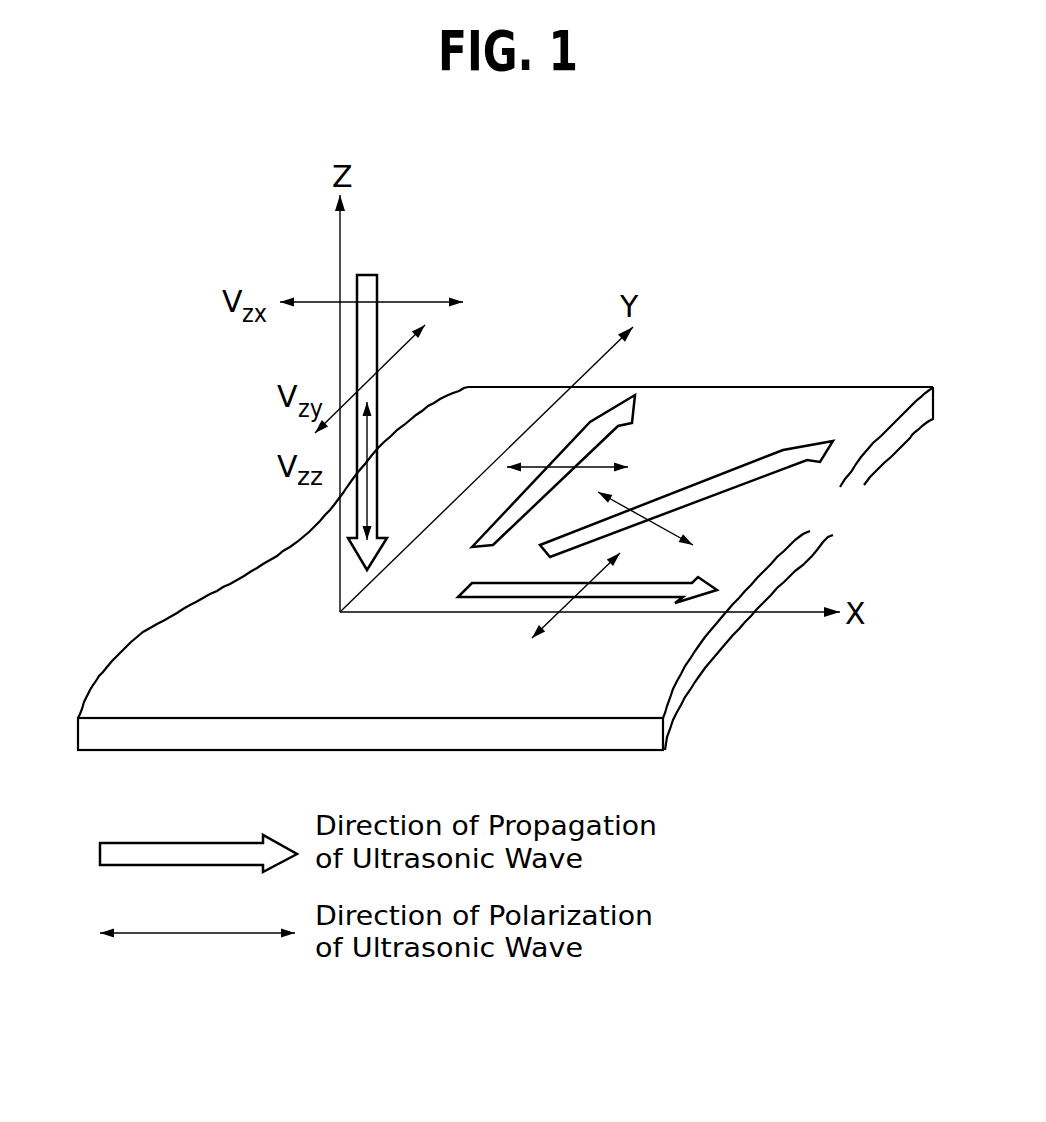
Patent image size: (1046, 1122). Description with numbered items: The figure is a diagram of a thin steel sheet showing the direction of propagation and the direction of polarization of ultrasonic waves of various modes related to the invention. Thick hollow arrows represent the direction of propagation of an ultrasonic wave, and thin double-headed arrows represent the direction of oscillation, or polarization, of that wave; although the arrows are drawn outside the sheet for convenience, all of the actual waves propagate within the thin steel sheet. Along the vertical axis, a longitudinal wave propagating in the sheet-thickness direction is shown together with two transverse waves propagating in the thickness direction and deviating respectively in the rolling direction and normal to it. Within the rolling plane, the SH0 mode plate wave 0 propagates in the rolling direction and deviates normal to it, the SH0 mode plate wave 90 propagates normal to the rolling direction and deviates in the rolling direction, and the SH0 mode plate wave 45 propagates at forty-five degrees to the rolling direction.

The SH0 mode plate wave at 90° 90 is at (632, 471).
The SH0 mode plate wave at 45° 45 is at (729, 499).
The SH0 mode plate wave at 0° 0 is at (587, 622).